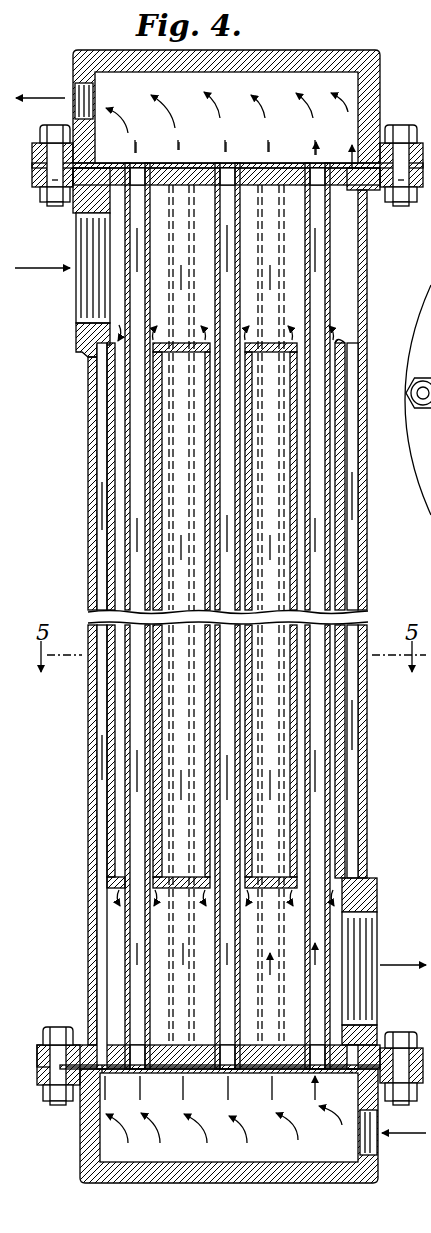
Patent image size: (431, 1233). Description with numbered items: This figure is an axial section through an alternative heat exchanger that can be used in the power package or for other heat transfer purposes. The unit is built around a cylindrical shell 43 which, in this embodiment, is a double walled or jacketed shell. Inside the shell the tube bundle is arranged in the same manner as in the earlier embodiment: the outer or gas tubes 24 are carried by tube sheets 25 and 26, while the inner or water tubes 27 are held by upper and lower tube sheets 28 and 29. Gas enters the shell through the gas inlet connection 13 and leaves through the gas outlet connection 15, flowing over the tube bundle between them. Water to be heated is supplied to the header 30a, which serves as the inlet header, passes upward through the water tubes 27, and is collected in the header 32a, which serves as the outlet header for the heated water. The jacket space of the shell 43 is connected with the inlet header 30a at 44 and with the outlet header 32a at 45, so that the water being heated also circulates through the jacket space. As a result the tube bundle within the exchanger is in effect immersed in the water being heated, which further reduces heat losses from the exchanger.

The gas inlet connection 13 is at (78, 242).
The gas outlet connection 15 is at (365, 952).
The outer or gas tubes 24 is at (338, 372).
The tube sheet 25 is at (340, 328).
The tube sheet 26 is at (377, 898).
The inner or water tubes 27 is at (327, 275).
The upper tube sheet 28 is at (333, 168).
The lower tube sheet 29 is at (297, 1062).
The header 30a is at (378, 1178).
The header 32a is at (350, 52).
The cylindrical shell 43 is at (88, 405).
The connection of jacket space with inlet header 44 is at (97, 1045).
The connection of jacket space with outlet header 45 is at (363, 188).